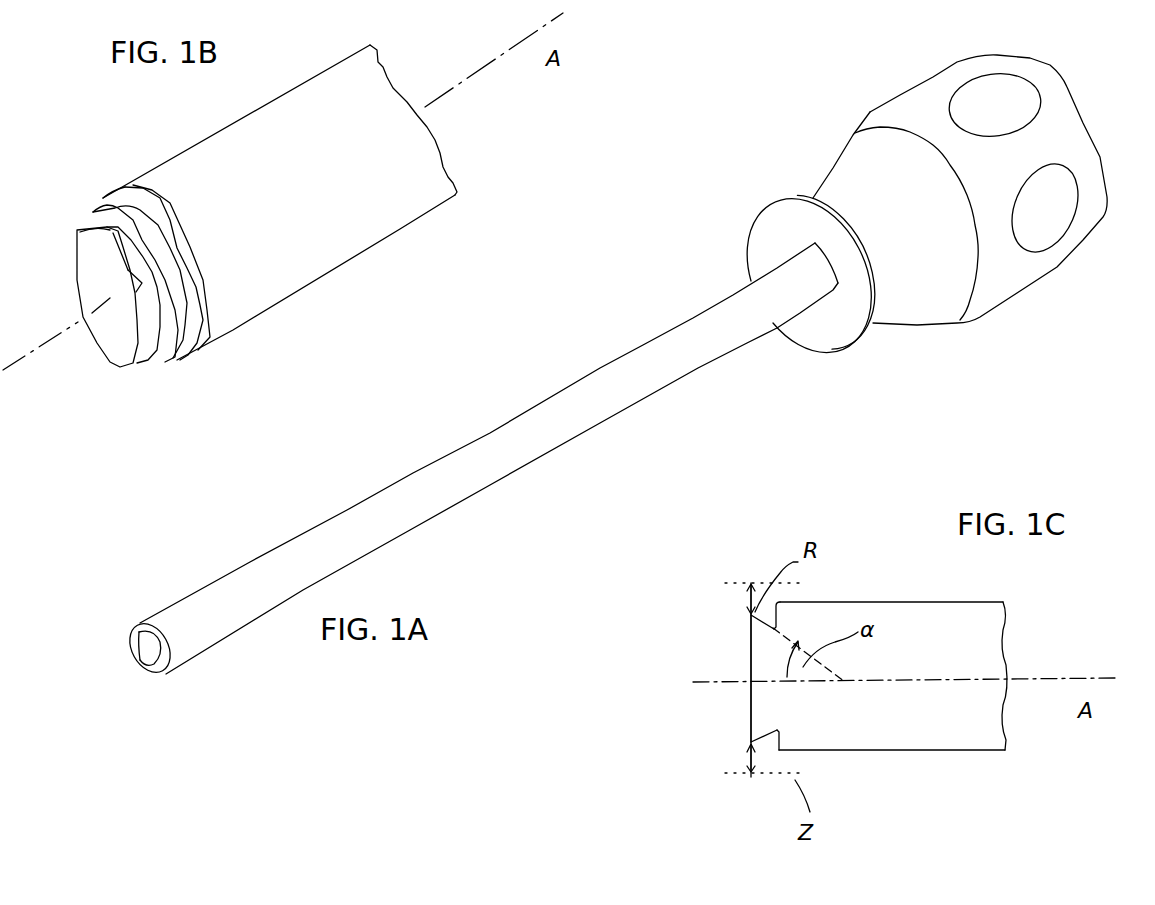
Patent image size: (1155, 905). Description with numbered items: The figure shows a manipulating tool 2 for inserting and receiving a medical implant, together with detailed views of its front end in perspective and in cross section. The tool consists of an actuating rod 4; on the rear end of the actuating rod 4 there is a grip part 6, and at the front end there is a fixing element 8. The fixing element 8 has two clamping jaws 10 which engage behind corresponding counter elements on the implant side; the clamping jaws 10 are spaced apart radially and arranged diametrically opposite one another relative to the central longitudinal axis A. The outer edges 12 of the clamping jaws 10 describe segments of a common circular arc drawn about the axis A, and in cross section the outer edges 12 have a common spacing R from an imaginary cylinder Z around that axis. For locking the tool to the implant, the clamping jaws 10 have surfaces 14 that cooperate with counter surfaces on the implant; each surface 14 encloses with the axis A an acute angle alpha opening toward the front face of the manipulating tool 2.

In FIG. 1C, the manipulating tool 2 is at (583, 597).
In FIG. 1A, the actuating rod 4 is at (413, 472).
In FIG. 1B, the actuating rod 4 is at (350, 263).
In FIG. 1C, the actuating rod 4 is at (907, 750).
In FIG. 1A, the grip part 6 is at (1010, 305).
In FIG. 1A, the fixing element 8 is at (147, 662).
In FIG. 1B, the fixing element 8 is at (117, 347).
In FIG. 1B, the clamping jaws 10 is at (112, 245).
In FIG. 1C, the clamping jaws 10 is at (760, 730).
In FIG. 1B, the outer edges 12 is at (74, 222).
In FIG. 1C, the outer edges 12 is at (746, 619).
In FIG. 1B, the surfaces 14 is at (138, 267).
In FIG. 1C, the surfaces 14 is at (780, 602).